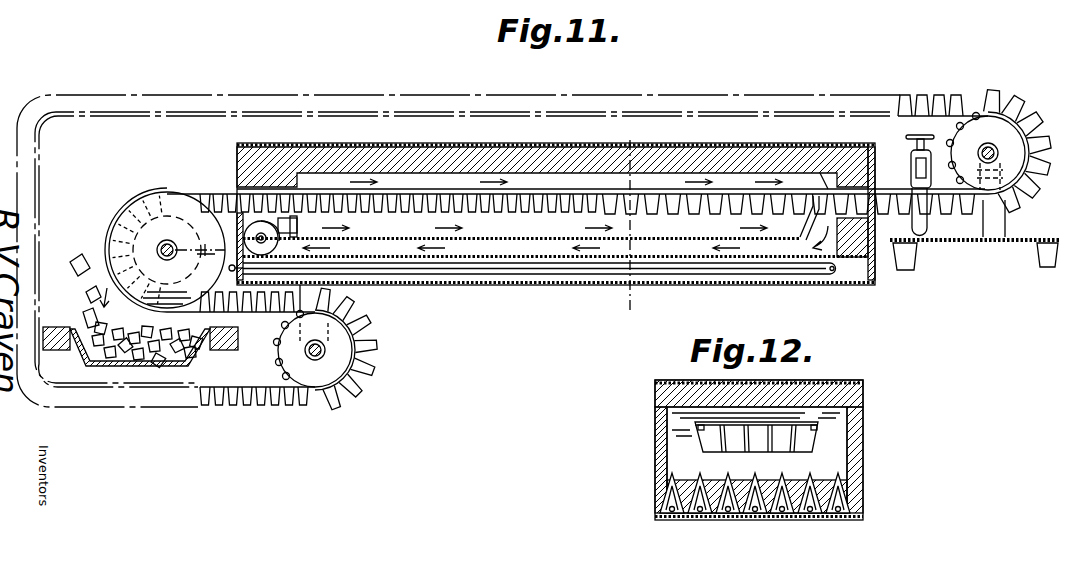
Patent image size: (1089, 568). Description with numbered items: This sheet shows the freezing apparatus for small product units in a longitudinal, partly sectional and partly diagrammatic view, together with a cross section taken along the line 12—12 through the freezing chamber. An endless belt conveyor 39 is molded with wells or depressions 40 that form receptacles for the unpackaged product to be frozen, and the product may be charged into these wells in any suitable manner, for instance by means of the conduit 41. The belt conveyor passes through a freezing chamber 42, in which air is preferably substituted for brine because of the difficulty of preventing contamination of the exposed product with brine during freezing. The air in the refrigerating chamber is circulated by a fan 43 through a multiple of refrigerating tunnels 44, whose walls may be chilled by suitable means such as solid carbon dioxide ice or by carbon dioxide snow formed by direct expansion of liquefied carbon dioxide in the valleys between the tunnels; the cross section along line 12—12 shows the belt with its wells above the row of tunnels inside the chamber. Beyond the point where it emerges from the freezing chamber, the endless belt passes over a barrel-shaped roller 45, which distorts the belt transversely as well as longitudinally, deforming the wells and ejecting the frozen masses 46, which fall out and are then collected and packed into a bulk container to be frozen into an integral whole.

In FIG. 11, the section line 12— 12 is at (638, 217).
In FIG. 11, the endless belt conveyor 39 is at (211, 108).
In FIG. 12, the endless belt conveyor 39 is at (820, 429).
In FIG. 11, the wells or depressions 40 is at (348, 99).
In FIG. 11, the conduit 41 is at (914, 166).
In FIG. 11, the freezing chamber 42 is at (780, 233).
In FIG. 12, the freezing chamber 42 is at (682, 465).
In FIG. 11, the fan 43 is at (268, 246).
In FIG. 11, the refrigerating tunnels 44 is at (380, 250).
In FIG. 12, the refrigerating tunnels 44 is at (668, 491).
In FIG. 11, the barrel-shaped roller 45 is at (171, 193).
In FIG. 11, the frozen masses 46 is at (83, 262).